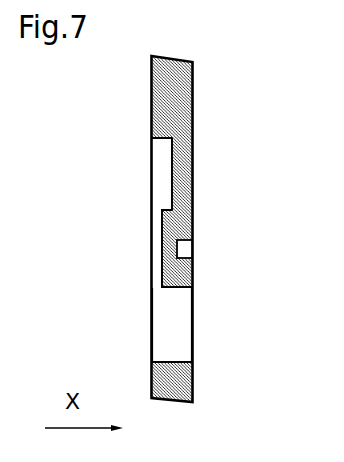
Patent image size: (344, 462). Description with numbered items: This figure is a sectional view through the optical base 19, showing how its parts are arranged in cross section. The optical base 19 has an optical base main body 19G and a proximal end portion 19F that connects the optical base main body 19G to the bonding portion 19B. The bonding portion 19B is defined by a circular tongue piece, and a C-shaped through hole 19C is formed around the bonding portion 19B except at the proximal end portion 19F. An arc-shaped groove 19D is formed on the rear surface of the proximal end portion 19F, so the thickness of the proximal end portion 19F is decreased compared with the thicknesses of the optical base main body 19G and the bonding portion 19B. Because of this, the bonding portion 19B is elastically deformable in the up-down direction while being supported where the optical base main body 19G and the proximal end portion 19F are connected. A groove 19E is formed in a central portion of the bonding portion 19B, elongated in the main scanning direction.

The optical base 19 is at (180, 385).
The bonding portion 19B is at (192, 281).
The C-shaped through hole 19C is at (180, 330).
The arc-shaped groove 19D is at (165, 176).
The groove 19E is at (182, 249).
The proximal end portion 19F is at (183, 180).
The optical base main body 19G is at (182, 123).